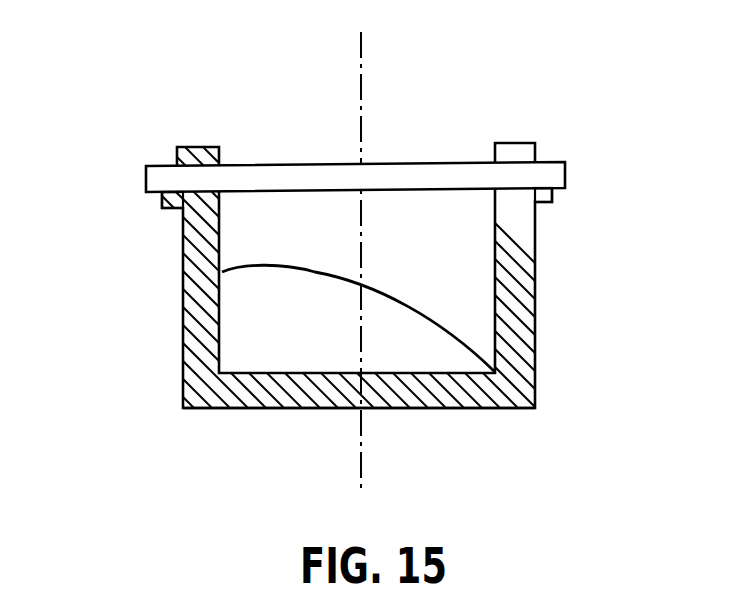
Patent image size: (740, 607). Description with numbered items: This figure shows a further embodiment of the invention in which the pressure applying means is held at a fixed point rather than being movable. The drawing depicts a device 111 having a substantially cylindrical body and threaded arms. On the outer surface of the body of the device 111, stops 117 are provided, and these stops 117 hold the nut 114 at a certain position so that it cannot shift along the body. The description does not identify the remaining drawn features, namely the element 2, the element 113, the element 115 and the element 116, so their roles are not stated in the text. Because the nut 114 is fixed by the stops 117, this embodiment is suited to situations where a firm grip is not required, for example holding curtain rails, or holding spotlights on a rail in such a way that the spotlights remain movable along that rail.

The device 111 is at (170, 50).
The cavity 2 is at (392, 225).
The nut 114 is at (553, 176).
The stops 117 is at (175, 200).
The membrane 113 is at (497, 330).
The bottom wall 116 is at (291, 374).
The crucible body 115 is at (378, 414).